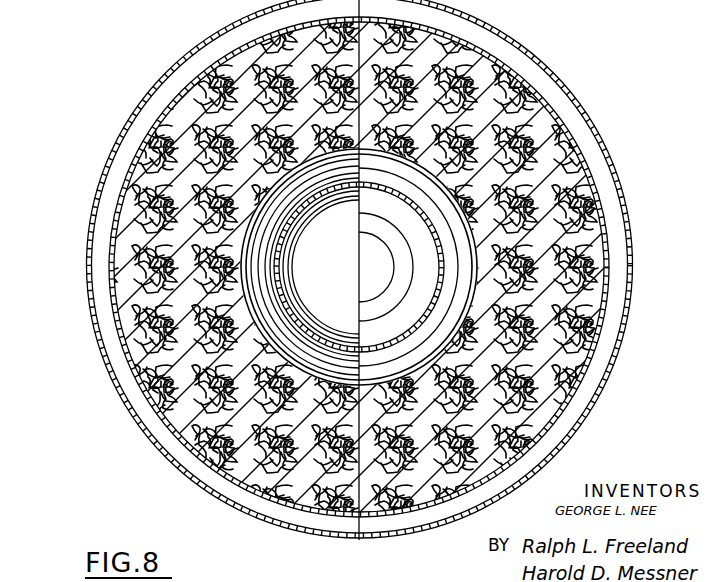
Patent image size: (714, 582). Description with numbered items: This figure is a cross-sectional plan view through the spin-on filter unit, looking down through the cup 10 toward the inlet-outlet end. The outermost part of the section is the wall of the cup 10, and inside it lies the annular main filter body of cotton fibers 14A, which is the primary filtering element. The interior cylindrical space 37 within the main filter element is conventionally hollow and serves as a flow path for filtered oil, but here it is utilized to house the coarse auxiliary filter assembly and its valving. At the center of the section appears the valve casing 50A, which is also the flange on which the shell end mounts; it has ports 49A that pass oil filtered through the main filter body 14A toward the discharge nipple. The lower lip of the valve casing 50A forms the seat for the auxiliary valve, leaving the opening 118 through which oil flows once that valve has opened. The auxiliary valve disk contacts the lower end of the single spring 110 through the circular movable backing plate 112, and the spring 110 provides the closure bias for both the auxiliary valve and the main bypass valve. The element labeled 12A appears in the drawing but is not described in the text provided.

The cup 10 is at (633, 293).
The inner shell 12A is at (612, 228).
The cotton fibers 14A is at (193, 152).
The cylindrical space 37 is at (263, 228).
The ports 49A is at (283, 307).
The valve casing 50A is at (420, 292).
The spring 110 is at (282, 260).
The backing plate 112 is at (335, 276).
The opening 118 is at (396, 276).